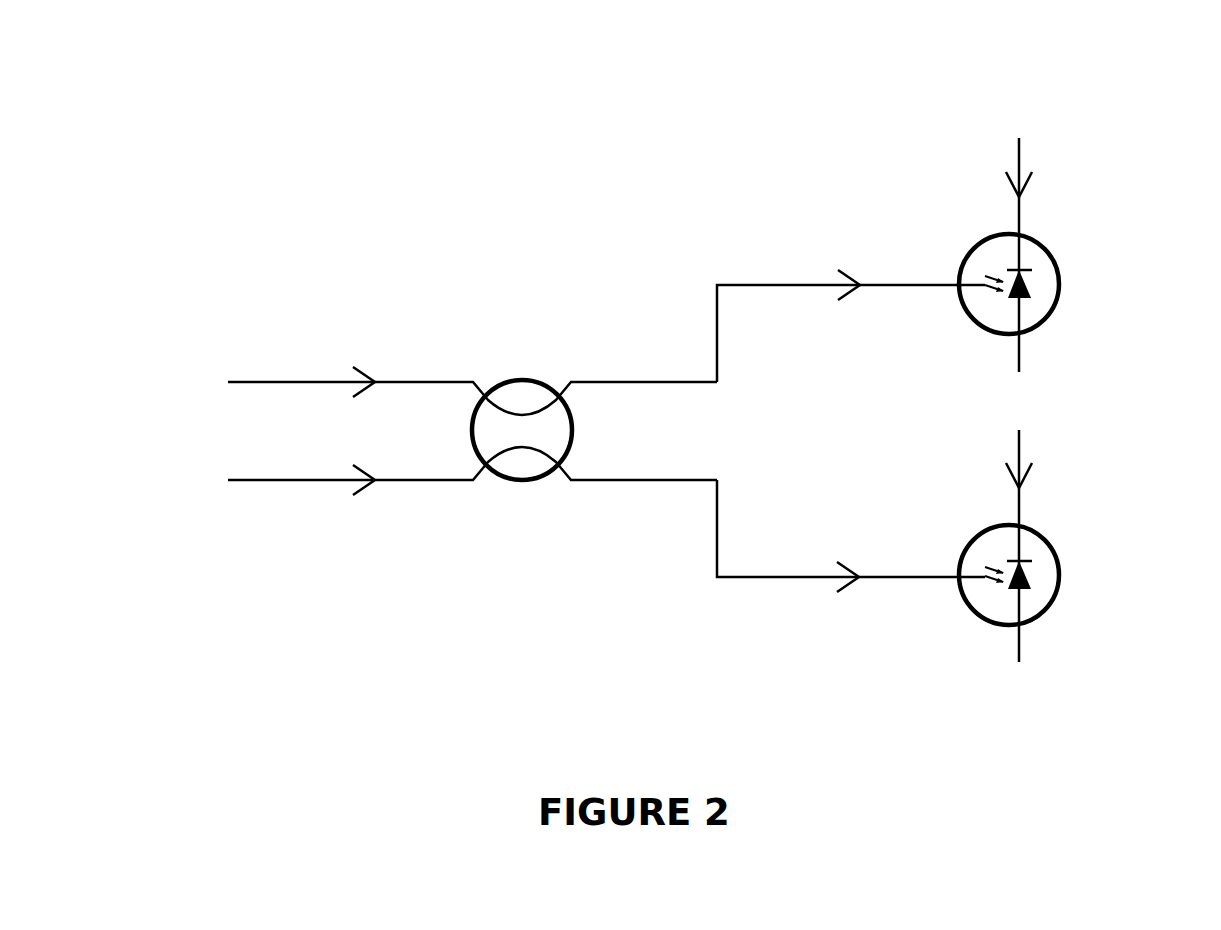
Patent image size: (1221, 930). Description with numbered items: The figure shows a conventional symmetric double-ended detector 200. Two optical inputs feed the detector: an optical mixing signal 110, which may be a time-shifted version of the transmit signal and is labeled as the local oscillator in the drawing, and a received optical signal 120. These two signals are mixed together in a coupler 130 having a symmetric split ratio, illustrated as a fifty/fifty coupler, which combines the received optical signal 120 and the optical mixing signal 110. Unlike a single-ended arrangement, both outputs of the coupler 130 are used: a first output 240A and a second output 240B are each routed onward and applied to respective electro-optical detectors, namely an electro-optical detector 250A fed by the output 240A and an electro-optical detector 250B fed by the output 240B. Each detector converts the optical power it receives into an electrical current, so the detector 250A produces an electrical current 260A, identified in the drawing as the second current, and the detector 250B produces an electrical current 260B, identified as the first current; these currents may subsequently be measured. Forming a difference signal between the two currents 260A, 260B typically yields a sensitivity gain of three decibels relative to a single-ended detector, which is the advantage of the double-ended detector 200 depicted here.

The symmetric double-ended detector 200 is at (593, 713).
The optical mixing signal 110 is at (285, 342).
The received optical signal 120 is at (282, 514).
The coupler 130 is at (524, 278).
The output 240A is at (815, 232).
The output 240B is at (815, 633).
The electro-optical detector 250A is at (952, 210).
The electro-optical detector 250B is at (968, 650).
The electrical current 260A is at (1100, 225).
The electrical current 260B is at (1100, 520).